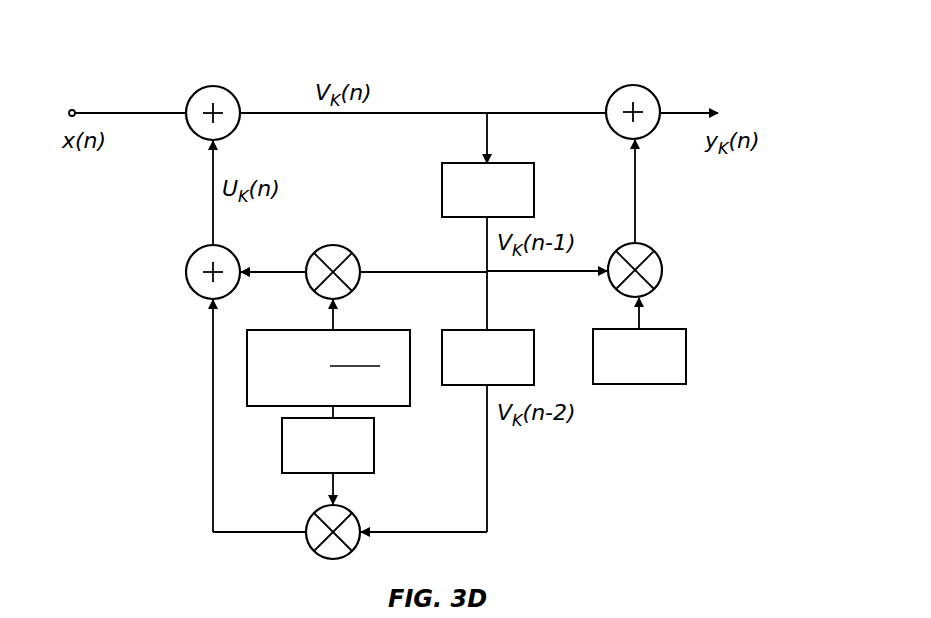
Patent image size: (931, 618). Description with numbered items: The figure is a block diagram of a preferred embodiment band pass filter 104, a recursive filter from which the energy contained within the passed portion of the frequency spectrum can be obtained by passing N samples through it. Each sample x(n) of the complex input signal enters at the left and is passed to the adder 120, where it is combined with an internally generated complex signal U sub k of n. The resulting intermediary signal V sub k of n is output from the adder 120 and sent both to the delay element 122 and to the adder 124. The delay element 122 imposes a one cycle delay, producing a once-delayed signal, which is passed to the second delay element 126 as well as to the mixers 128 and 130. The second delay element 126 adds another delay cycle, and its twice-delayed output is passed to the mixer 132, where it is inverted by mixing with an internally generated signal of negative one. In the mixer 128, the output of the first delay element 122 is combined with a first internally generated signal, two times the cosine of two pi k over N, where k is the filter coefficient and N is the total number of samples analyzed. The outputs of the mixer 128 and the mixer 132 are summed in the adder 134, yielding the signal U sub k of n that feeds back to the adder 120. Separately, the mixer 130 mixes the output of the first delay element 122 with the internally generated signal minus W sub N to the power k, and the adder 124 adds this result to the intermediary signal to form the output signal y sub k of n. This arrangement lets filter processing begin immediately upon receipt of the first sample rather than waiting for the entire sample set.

The band pass filter 104 is at (556, 70).
The adder 120 is at (194, 93).
The delay element 122 is at (510, 163).
The adder 124 is at (652, 92).
The second delay element 126 is at (508, 330).
The mixer 128 is at (354, 254).
The mixer 130 is at (655, 254).
The mixer 132 is at (354, 513).
The adder 134 is at (194, 253).